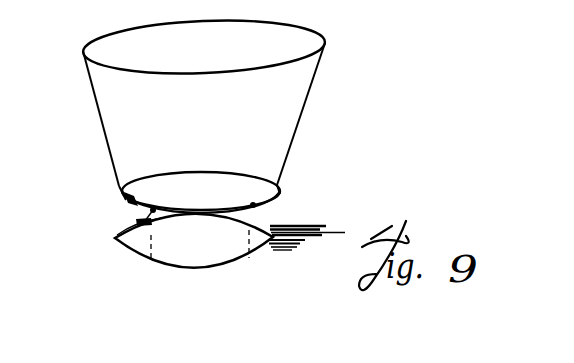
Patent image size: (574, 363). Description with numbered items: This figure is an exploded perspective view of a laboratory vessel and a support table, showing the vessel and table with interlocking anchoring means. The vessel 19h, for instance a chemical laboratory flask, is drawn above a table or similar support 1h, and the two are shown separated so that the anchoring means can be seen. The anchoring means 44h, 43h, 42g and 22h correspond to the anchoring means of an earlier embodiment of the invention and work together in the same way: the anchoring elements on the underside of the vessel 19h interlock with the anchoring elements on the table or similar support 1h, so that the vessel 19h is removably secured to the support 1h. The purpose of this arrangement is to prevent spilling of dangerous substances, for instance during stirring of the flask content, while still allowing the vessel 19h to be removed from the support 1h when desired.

The vessel 19h is at (295, 120).
The anchoring means 42g is at (253, 203).
The anchoring means 22h is at (197, 214).
The anchoring means 43h is at (147, 222).
The anchoring means 44h is at (270, 227).
The table or similar support 1h is at (305, 236).